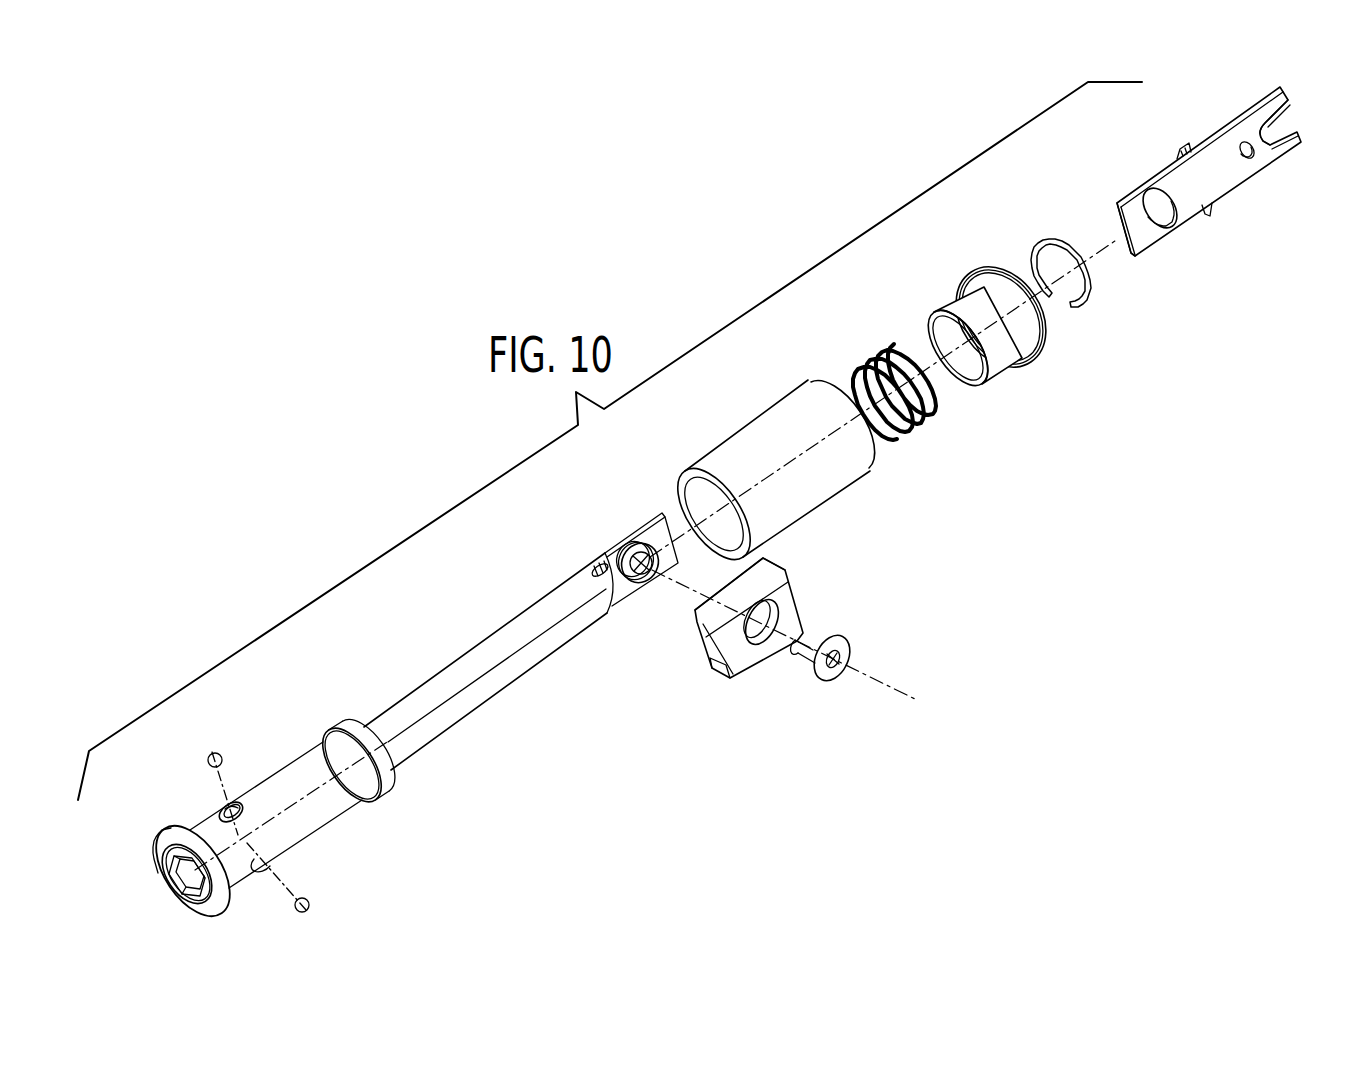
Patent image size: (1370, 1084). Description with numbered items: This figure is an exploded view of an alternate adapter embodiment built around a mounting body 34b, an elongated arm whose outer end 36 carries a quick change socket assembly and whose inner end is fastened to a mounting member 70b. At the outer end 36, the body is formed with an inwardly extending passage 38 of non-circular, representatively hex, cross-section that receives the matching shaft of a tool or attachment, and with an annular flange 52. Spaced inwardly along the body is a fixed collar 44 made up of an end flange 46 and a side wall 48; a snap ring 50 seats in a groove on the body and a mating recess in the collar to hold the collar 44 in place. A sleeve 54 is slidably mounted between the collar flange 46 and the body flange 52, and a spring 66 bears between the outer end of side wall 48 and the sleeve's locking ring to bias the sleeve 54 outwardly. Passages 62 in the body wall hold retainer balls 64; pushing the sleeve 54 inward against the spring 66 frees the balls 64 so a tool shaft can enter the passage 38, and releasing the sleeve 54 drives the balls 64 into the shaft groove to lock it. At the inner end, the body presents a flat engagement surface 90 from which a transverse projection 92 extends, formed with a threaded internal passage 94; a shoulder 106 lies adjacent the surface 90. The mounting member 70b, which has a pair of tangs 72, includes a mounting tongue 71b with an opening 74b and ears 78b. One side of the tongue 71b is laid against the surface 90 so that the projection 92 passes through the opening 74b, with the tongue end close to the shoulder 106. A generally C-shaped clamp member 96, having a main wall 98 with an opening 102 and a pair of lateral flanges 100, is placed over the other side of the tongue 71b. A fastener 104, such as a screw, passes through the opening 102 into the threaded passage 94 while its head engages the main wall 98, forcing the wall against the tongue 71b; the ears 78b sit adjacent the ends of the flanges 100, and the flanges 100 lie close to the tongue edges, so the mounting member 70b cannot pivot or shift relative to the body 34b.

The mounting body 34b is at (507, 618).
The outer end 36 is at (208, 910).
The passage 38 is at (173, 882).
The annular flange 52 is at (220, 905).
The passages 62 is at (247, 807).
The balls 64 is at (219, 754).
The flat engagement surface 90 is at (623, 593).
The transverse projection 92 is at (645, 545).
The threaded internal passage 94 is at (652, 572).
The shoulder 106 is at (603, 560).
The sleeve 54 is at (778, 392).
The spring 66 is at (920, 417).
The fixed collar 44 is at (1002, 328).
The end flange 46 is at (987, 267).
The side wall 48 is at (943, 297).
The snap ring 50 is at (1089, 290).
The mounting member 70b is at (1198, 193).
The mounting tongue 71b is at (1117, 193).
The tangs 72 is at (1301, 140).
The mounting tongue opening 74b is at (1171, 228).
The ears 78b is at (1230, 257).
The clamp member 96 is at (773, 639).
The main wall 98 is at (790, 622).
The lateral flanges 100 is at (710, 667).
The opening 102 is at (767, 587).
The fastener 104 is at (827, 676).